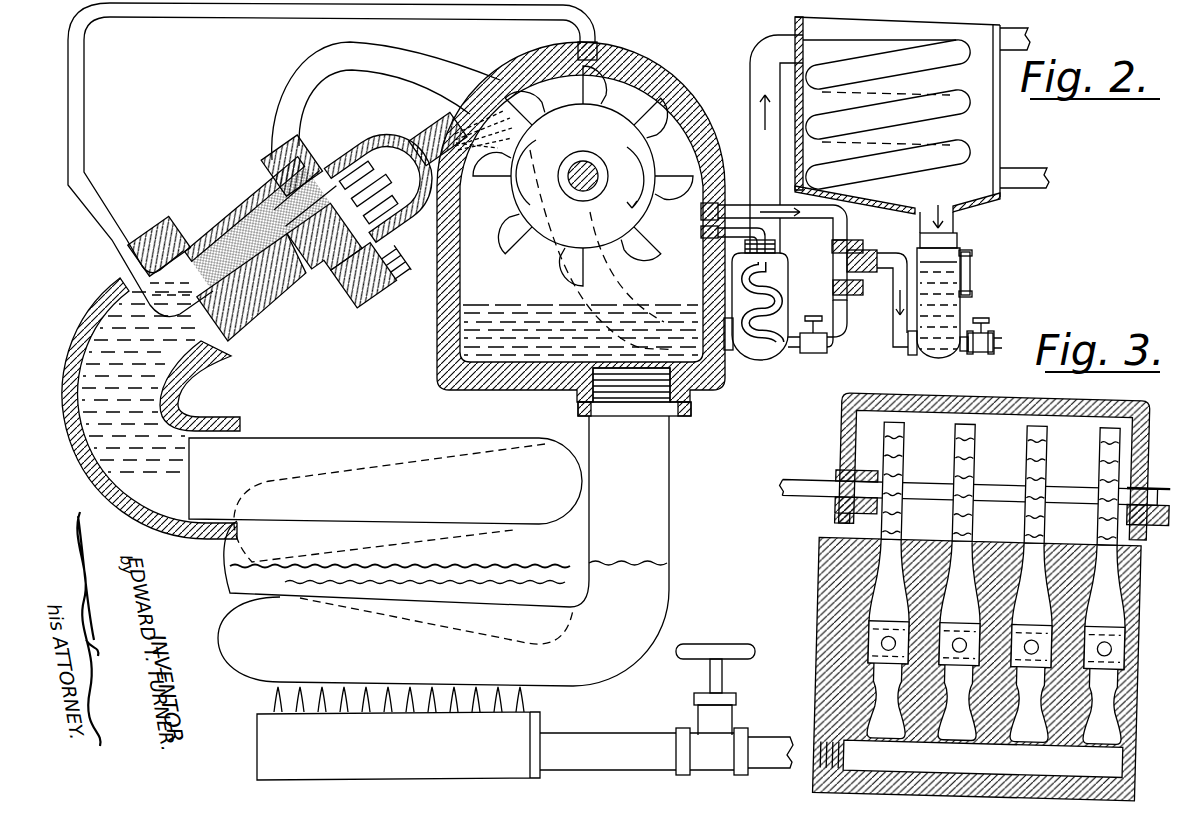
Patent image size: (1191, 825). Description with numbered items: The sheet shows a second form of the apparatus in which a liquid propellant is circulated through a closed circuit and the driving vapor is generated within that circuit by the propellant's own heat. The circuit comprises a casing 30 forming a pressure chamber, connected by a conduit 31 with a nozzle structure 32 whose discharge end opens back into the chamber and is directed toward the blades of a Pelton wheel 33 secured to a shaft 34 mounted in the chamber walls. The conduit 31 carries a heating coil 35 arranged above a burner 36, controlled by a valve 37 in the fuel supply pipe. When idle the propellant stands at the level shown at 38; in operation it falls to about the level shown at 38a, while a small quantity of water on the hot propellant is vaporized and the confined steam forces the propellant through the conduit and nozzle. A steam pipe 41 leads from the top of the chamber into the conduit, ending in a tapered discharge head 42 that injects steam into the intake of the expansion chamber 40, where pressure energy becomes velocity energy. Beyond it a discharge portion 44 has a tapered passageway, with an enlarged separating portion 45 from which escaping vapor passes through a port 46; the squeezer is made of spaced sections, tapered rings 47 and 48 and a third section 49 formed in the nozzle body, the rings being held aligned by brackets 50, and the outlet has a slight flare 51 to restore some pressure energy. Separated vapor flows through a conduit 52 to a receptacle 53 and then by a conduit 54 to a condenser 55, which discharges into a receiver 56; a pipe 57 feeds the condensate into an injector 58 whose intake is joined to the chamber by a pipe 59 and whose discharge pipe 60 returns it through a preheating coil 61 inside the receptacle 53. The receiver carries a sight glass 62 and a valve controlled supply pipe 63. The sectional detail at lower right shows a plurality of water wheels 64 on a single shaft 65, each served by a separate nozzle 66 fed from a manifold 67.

In FIG. 2, the casing 30 is at (430, 364).
In FIG. 2, the conduit 31 is at (130, 498).
In FIG. 2, the nozzle structure 32 is at (297, 234).
In FIG. 2, the Pelton wheel 33 is at (583, 176).
In FIG. 2, the shaft 34 is at (590, 188).
In FIG. 2, the coil 35 is at (385, 562).
In FIG. 2, the burner 36 is at (540, 720).
In FIG. 2, the valve 37 is at (738, 727).
In FIG. 2, the idle level of propellant 38 is at (522, 308).
In FIG. 2, the operating level of propellant 38a is at (640, 313).
In FIG. 2, the expansion chamber 40 is at (249, 298).
In FIG. 2, the steam pipe 41 is at (490, 12).
In FIG. 2, the discharge head 42 is at (211, 305).
In FIG. 2, the discharge portion 44 is at (404, 238).
In FIG. 2, the enlarged portion 45 is at (377, 294).
In FIG. 2, the port 46 is at (318, 176).
In FIG. 2, the tapered ring 47 is at (322, 224).
In FIG. 2, the tapered ring 48 is at (376, 186).
In FIG. 2, the third section 49 is at (406, 152).
In FIG. 2, the brackets 50 is at (390, 288).
In FIG. 2, the flare 51 is at (472, 145).
In FIG. 2, the conduit 52 is at (425, 82).
In FIG. 2, the receptacle 53 is at (770, 314).
In FIG. 2, the conduit 54 is at (758, 85).
In FIG. 2, the condenser 55 is at (945, 108).
In FIG. 2, the receiver 56 is at (960, 315).
In FIG. 2, the pipe 57 is at (893, 335).
In FIG. 2, the injector 58 is at (868, 248).
In FIG. 2, the pipe 59 is at (826, 207).
In FIG. 2, the pipe 60 is at (703, 231).
In FIG. 2, the coil 61 is at (782, 302).
In FIG. 2, the sight glass 62 is at (971, 283).
In FIG. 2, the valve controlled supply pipe 63 is at (998, 340).
In FIG. 3, the water wheels 64 is at (963, 456).
In FIG. 3, the shaft 65 is at (1057, 497).
In FIG. 3, the nozzle 66 is at (997, 632).
In FIG. 3, the manifold 67 is at (977, 668).